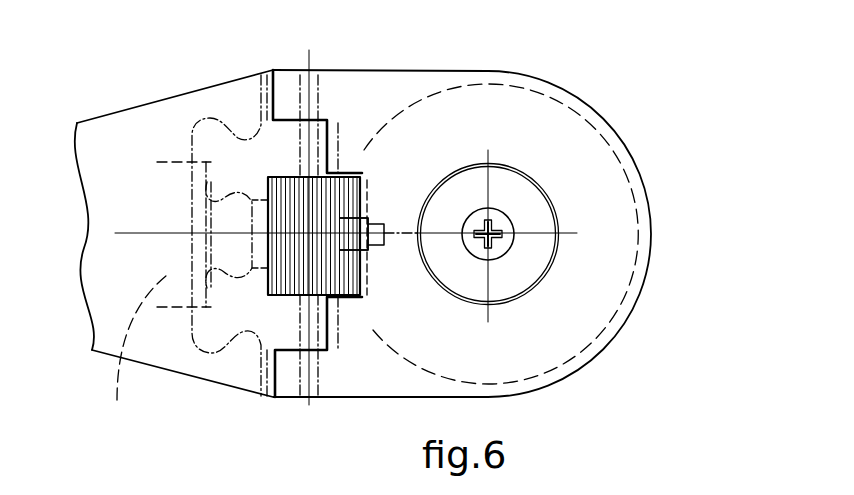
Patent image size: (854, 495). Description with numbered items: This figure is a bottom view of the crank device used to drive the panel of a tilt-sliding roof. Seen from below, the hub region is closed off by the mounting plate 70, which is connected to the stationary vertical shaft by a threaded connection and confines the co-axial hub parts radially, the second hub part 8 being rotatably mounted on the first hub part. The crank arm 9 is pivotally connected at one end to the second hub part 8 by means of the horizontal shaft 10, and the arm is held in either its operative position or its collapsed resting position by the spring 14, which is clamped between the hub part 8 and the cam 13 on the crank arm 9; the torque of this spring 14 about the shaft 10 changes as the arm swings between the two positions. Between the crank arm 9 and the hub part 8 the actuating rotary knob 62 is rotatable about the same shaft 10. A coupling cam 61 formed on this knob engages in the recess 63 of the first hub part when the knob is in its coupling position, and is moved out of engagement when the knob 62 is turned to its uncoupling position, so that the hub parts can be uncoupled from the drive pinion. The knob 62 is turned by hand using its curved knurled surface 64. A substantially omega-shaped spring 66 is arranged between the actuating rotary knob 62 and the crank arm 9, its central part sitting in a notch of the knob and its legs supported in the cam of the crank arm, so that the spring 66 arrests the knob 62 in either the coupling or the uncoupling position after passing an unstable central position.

The second hub part 8 is at (395, 85).
The crank arm 9 is at (167, 357).
The horizontal shaft 10 is at (303, 93).
The cam 13 is at (117, 400).
The spring 14 is at (192, 132).
The coupling cam 61 is at (370, 215).
The actuating rotary knob 62 is at (340, 213).
The recess 63 is at (383, 224).
The knurled surface 64 is at (328, 203).
The omega-shaped spring 66 is at (207, 184).
The mounting plate 70 is at (513, 190).